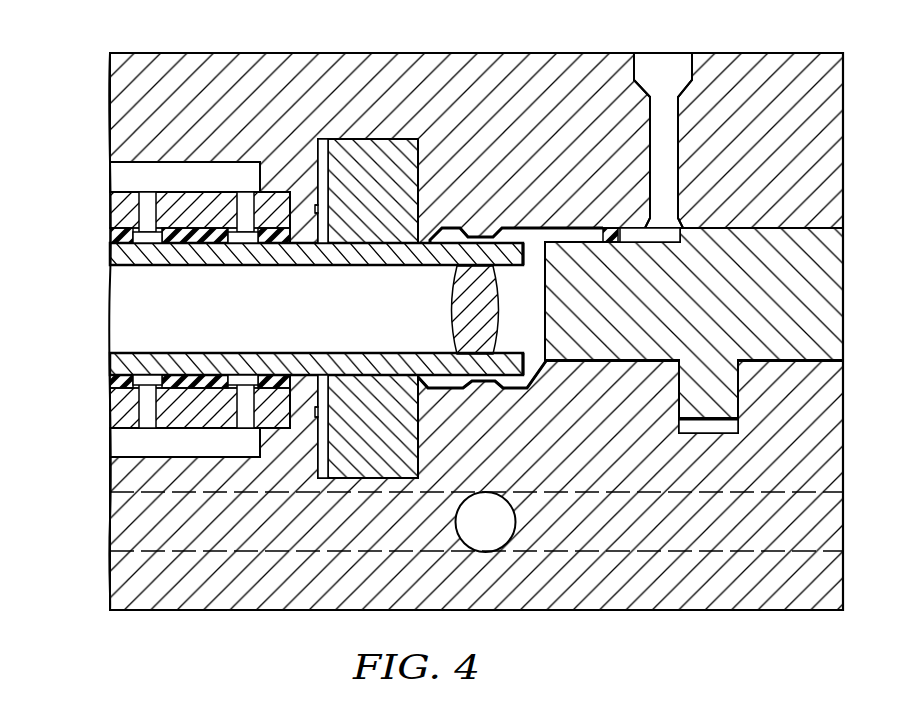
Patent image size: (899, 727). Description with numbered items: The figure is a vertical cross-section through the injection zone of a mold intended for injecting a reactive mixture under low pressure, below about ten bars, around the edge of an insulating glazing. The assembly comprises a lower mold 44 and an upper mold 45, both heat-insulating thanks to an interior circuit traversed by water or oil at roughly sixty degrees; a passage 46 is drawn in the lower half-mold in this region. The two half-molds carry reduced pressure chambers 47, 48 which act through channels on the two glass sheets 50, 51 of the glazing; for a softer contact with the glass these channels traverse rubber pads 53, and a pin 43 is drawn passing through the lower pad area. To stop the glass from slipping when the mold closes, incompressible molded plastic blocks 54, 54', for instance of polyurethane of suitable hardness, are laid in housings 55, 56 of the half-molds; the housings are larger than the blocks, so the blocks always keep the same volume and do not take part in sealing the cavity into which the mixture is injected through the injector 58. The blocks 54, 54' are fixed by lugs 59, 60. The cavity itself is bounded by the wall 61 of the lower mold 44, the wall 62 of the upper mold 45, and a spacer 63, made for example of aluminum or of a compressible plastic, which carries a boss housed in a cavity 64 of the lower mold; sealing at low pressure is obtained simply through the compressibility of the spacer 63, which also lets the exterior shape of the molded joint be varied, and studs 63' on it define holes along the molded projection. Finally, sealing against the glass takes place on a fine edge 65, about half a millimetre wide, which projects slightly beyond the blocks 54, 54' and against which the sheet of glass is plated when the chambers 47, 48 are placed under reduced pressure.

The pin 43 is at (143, 380).
The lower mold 44 is at (833, 462).
The upper mold 45 is at (823, 168).
The coolant passage 46 is at (503, 529).
The reduced pressure chamber 47 is at (117, 437).
The reduced pressure chamber 48 is at (110, 180).
The glass sheet 50 is at (262, 266).
The glass sheet 51 is at (262, 358).
The rubber pad 53 is at (200, 378).
The molded plastic block 54 is at (373, 459).
The molded plastic block 54' is at (373, 131).
The housing 55 is at (318, 144).
The housing 56 is at (318, 465).
The injector 58 is at (663, 108).
The lug 59 is at (318, 208).
The lug 60 is at (317, 411).
The wall of the lower mold 61 is at (510, 388).
The wall of the upper mold 62 is at (477, 232).
The spacer 63 is at (713, 323).
The stud 63' is at (596, 200).
The cavity of the lower mold 64 is at (733, 426).
The edge 65 is at (422, 377).